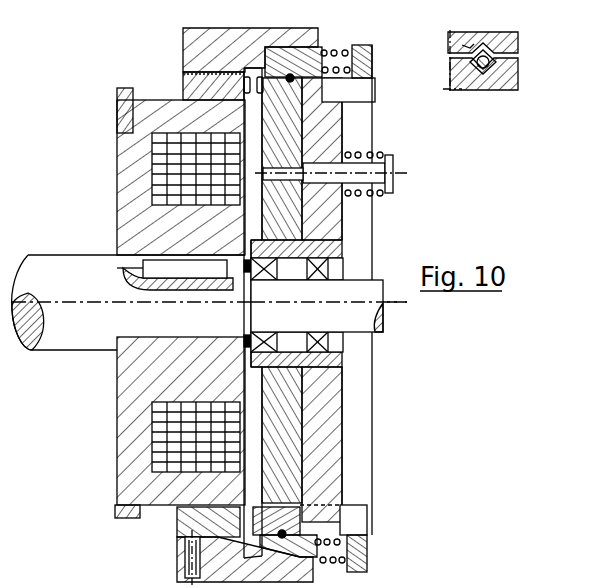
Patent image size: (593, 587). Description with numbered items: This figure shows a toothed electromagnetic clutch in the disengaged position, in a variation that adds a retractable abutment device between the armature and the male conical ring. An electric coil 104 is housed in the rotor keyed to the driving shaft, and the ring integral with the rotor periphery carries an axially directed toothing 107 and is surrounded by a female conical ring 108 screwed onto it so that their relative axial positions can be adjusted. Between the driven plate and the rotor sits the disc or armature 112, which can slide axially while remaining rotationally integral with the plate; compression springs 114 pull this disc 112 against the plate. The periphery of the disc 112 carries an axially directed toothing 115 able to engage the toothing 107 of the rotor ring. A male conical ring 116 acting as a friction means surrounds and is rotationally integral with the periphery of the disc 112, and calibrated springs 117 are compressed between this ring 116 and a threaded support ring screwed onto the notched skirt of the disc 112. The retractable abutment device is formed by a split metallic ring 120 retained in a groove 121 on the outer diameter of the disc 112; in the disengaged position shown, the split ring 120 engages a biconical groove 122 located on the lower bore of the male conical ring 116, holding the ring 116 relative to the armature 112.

The electric coil 104 is at (167, 160).
The axially directed toothing 107 is at (183, 93).
The female conical ring 108 is at (195, 46).
The disc or armature 112 is at (282, 97).
The compression springs 114 is at (383, 155).
The axially directed toothing 115 is at (225, 73).
The male conical ring 116 is at (308, 50).
The calibrated springs 117 is at (263, 318).
The split metallic ring 120 is at (284, 74).
The groove 121 is at (335, 85).
The biconical groove 122 is at (470, 48).